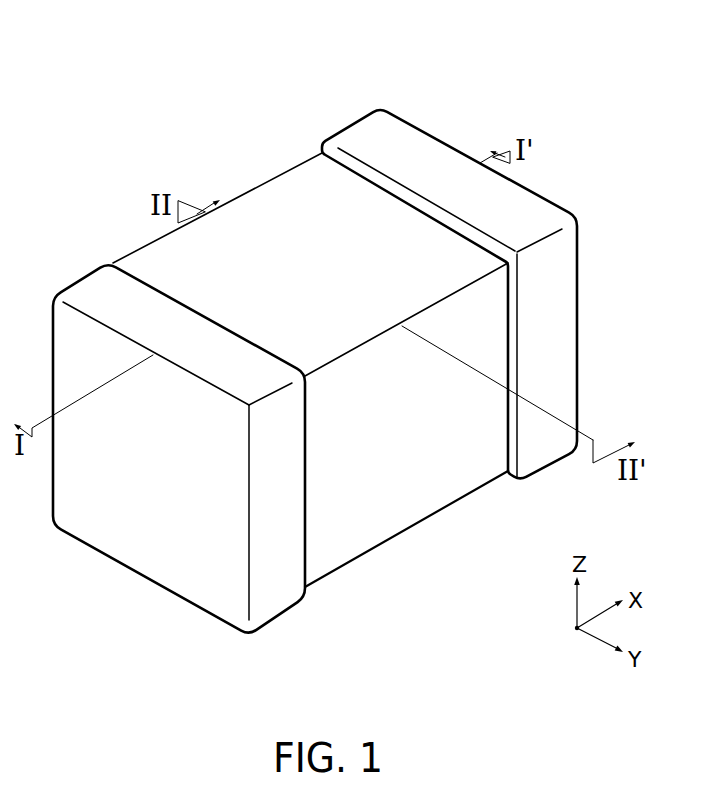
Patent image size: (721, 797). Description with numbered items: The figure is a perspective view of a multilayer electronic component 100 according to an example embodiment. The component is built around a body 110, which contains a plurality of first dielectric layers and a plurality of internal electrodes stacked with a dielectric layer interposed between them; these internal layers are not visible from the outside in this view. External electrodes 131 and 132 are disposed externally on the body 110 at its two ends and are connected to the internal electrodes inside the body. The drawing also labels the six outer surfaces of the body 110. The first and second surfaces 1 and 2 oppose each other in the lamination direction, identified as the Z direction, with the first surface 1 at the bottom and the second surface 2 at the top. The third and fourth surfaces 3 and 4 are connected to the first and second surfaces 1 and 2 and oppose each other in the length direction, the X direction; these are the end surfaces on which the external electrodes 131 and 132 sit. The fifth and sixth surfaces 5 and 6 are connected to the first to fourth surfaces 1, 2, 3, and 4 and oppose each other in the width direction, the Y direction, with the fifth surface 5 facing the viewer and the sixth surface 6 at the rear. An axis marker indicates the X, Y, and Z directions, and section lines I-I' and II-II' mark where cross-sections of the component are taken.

The multilayer electronic component 100 is at (170, 54).
The body 110 is at (172, 257).
The first surface 1 is at (357, 558).
The second surface 2 is at (301, 192).
The third surface 3 is at (127, 537).
The fourth surface 4 is at (468, 146).
The fifth surface 5 is at (386, 510).
The sixth surface 6 is at (230, 201).
The external electrode 131 is at (93, 283).
The external electrode 132 is at (363, 124).